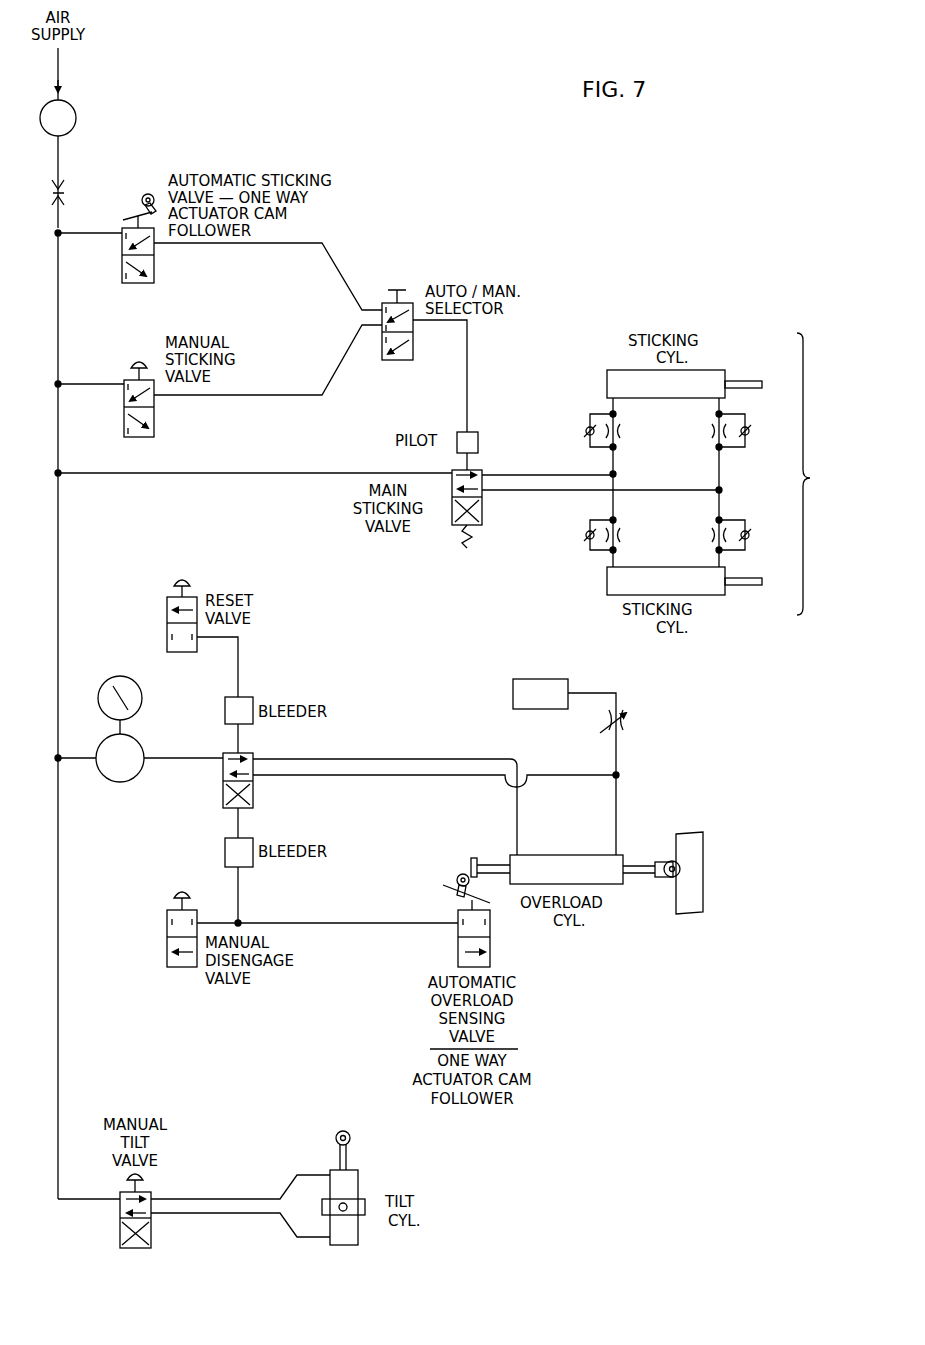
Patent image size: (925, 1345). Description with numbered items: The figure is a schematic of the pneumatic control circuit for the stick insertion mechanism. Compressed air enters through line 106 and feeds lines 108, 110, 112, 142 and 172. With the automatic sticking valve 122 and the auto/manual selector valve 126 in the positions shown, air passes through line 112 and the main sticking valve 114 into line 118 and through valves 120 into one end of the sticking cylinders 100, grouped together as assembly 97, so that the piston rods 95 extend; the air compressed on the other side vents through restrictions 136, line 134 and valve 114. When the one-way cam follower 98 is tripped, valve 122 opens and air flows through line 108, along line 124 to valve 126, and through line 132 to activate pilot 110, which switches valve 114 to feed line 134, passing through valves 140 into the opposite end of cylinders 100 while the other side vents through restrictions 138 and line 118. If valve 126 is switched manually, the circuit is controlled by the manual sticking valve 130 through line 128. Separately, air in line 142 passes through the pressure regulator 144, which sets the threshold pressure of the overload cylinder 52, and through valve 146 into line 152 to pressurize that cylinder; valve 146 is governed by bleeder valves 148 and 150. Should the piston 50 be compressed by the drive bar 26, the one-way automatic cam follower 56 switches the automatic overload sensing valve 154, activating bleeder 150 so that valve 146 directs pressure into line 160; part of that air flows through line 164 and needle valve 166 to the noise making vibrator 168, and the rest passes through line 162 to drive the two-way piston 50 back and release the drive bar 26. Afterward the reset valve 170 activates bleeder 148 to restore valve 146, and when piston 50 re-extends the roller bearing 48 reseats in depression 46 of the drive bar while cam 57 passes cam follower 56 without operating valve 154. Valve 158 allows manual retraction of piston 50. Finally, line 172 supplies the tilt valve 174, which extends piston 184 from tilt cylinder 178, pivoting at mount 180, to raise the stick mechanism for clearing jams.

The drive bar 26 is at (703, 898).
The depression 46 is at (680, 862).
The roller bearing 48 is at (672, 877).
The piston 50 is at (645, 862).
The cylinder 52 is at (583, 853).
The one-way automatic cam follower 56 is at (456, 893).
The cam 57 is at (474, 858).
The piston rods 95 is at (745, 380).
The sticking cylinder assembly 97 is at (819, 474).
The one-way cam follower 98 is at (140, 210).
The cylinders 100 is at (664, 398).
The line 106 is at (60, 156).
The line 108 is at (97, 236).
The pilot 110 is at (97, 386).
The line 112 is at (88, 476).
The valve 114 is at (482, 521).
The line 118 is at (558, 479).
The valves 120 is at (592, 427).
The valve 122 is at (154, 266).
The line from automatic sticking valve 124 is at (336, 263).
The valve 126 is at (413, 358).
The line from manual sticking valve 128 is at (272, 396).
The valve 130 is at (154, 432).
The line 132 is at (468, 393).
The line 134 is at (562, 492).
The restrictions 136 is at (712, 436).
The restrictions 138 is at (619, 436).
The valves 140 is at (748, 434).
The line 142 is at (70, 762).
The pressure regulator 144 is at (143, 698).
The valve 146 is at (222, 796).
The bleeder valve 148 is at (253, 720).
The bleeder valve 150 is at (253, 862).
The line 152 is at (408, 758).
The valve 154 is at (490, 961).
The valve 158 is at (167, 942).
The line 160 is at (412, 780).
The line 162 is at (618, 788).
The line 164 is at (618, 750).
The needle valve 166 is at (624, 727).
The vibrator 168 is at (528, 679).
The reset valve 170 is at (167, 620).
The line 172 is at (98, 1197).
The tilt valve 174 is at (120, 1239).
The cylinder 178 is at (358, 1180).
The tilt cylinder pivot 180 is at (346, 1211).
The piston 184 is at (350, 1138).